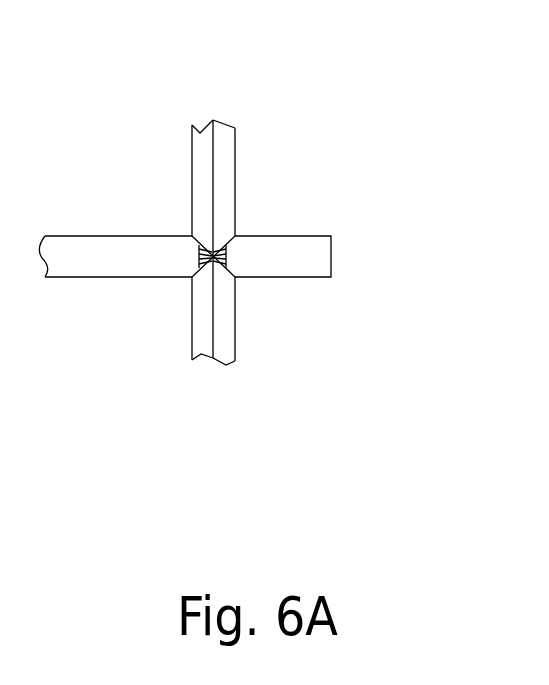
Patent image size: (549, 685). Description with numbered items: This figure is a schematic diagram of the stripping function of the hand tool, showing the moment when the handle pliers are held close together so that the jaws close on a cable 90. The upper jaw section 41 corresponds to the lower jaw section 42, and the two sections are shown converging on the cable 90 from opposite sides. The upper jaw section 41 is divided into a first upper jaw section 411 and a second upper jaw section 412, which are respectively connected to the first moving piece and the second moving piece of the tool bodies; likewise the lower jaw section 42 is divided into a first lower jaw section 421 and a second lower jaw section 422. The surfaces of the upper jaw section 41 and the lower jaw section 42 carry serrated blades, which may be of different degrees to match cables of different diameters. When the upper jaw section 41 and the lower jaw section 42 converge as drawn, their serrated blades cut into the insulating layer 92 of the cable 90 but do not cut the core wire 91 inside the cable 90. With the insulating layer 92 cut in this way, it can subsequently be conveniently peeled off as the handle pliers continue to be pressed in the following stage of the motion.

The upper jaw section 41 is at (196, 185).
The first upper jaw section 411 is at (221, 122).
The second upper jaw section 412 is at (200, 132).
The lower jaw section 42 is at (185, 356).
The first lower jaw section 421 is at (226, 365).
The second lower jaw section 422 is at (200, 356).
The cable 90 is at (256, 204).
The core wire 91 is at (216, 256).
The insulating layer 92 is at (289, 243).